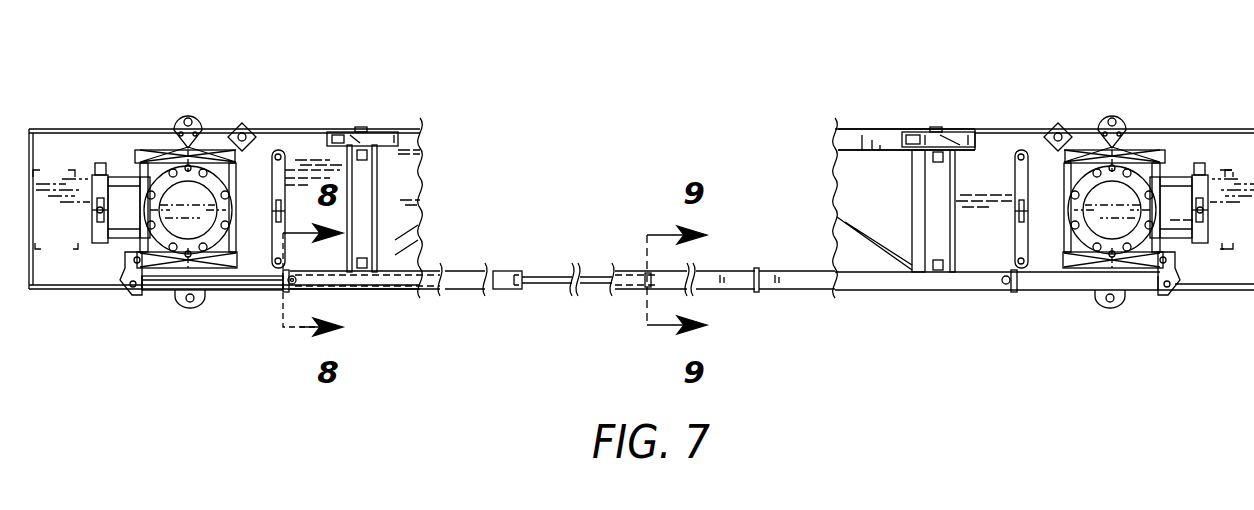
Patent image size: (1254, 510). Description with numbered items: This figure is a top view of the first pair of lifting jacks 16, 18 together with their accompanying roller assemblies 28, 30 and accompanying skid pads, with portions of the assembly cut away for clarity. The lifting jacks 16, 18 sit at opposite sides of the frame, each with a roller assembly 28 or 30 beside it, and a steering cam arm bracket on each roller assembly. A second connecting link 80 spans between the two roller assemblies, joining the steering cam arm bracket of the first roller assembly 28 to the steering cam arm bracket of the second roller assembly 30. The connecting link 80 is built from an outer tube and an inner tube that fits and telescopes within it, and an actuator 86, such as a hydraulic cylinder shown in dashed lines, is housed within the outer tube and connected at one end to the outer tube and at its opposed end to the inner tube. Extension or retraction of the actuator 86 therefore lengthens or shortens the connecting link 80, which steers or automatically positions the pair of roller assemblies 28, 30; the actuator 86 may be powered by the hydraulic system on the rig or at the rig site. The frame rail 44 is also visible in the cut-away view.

The lifting jack 16 is at (178, 198).
The lifting jack 18 is at (1122, 197).
The roller assembly 28 is at (123, 236).
The roller assembly 30 is at (1177, 236).
The frame rail 44 is at (853, 142).
The second connecting link 80 is at (510, 326).
The actuator 86 is at (388, 281).